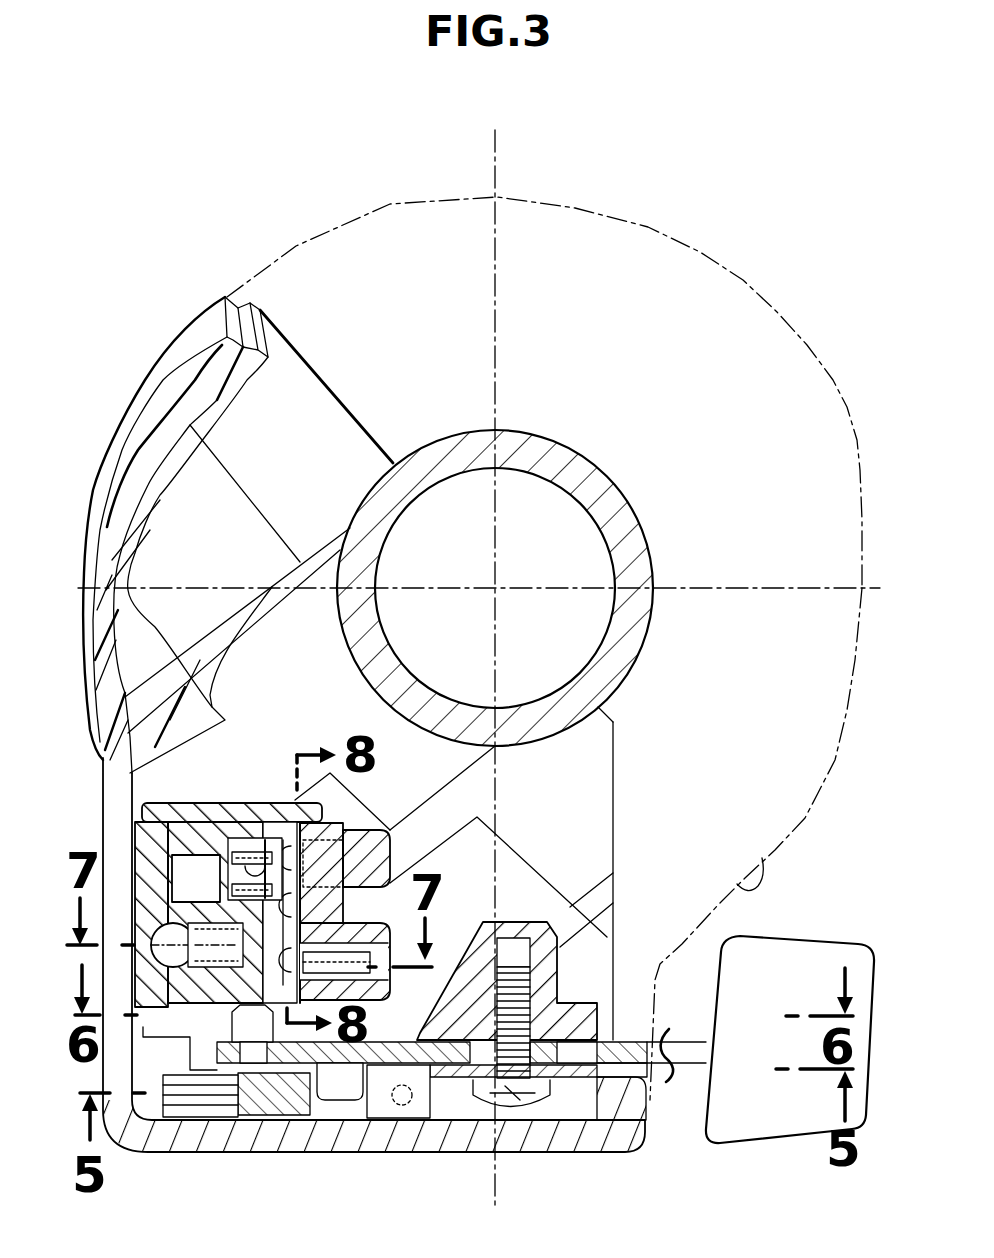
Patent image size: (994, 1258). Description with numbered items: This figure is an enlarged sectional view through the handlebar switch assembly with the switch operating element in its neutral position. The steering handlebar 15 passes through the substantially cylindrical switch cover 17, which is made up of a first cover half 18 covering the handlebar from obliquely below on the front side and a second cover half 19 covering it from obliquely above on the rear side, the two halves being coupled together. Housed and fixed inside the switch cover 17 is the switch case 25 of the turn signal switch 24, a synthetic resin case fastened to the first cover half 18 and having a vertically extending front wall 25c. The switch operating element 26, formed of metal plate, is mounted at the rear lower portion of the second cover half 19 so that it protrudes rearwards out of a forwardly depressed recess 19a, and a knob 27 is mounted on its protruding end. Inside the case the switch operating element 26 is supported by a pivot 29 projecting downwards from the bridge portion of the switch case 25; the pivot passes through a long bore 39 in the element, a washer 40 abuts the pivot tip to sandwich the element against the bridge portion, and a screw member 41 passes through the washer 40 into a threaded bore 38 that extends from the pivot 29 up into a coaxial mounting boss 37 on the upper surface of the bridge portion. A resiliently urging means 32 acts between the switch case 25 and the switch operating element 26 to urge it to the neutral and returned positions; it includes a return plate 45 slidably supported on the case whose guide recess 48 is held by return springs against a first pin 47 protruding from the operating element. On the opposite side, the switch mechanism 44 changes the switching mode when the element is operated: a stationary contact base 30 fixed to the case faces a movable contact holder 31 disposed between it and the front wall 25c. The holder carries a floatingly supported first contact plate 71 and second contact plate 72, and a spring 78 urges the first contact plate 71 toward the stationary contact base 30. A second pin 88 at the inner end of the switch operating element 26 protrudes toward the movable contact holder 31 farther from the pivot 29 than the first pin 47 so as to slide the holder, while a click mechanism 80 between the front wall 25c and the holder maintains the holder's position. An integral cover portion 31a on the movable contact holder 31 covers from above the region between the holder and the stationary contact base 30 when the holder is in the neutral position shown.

The steering handlebar 15 is at (613, 498).
The switch cover 17 is at (650, 222).
The first cover half 18 is at (127, 423).
The second cover half 19 is at (745, 282).
The recess 19a is at (760, 868).
The turn signal switch 24 is at (445, 950).
The switch case 25 is at (271, 803).
The front wall 25c is at (145, 877).
The switch operating element 26 is at (660, 1072).
The knob 27 is at (777, 1129).
The pivot 29 is at (625, 1080).
The stationary contact base 30 is at (355, 826).
The movable contact holder 31 is at (272, 840).
The cover portion 31a is at (343, 810).
The resiliently urging means 32 is at (230, 1100).
The mounting boss 37 is at (550, 940).
The threaded bore 38 is at (513, 937).
The long bore 39 is at (608, 1044).
The washer 40 is at (460, 1100).
The screw member 41 is at (505, 1100).
The switch mechanism 44 is at (400, 852).
The return plate 45 is at (278, 1110).
The first pin 47 is at (352, 1087).
The guide recess 48 is at (318, 1108).
The first contact plate 71 is at (262, 820).
The second contact plate 72 is at (345, 971).
The spring 78 is at (228, 871).
The click mechanism 80 is at (156, 918).
The second pin 88 is at (238, 1025).